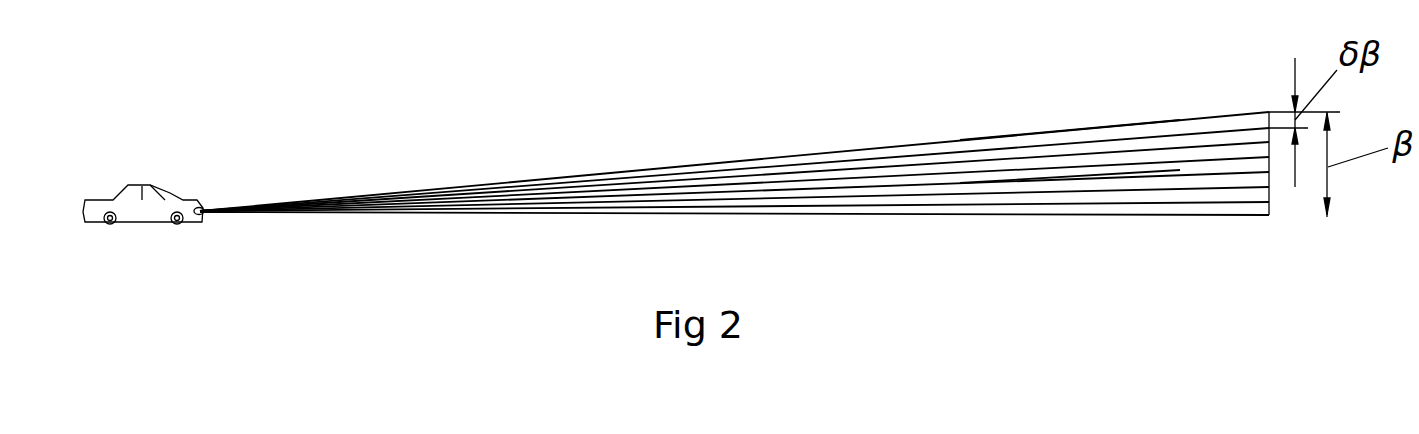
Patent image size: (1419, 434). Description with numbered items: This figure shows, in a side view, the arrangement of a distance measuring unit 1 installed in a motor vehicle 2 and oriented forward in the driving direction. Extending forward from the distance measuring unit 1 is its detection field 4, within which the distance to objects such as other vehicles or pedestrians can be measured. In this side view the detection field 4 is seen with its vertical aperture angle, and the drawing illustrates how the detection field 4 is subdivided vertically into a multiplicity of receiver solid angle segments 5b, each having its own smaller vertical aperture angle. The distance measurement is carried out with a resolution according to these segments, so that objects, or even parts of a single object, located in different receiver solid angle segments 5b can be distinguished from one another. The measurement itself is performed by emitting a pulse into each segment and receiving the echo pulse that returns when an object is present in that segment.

The distance measuring unit 1 is at (196, 207).
The motor vehicle 2 is at (110, 181).
The detection field 4 is at (662, 163).
The receiver solid angle segments 5b is at (1037, 187).